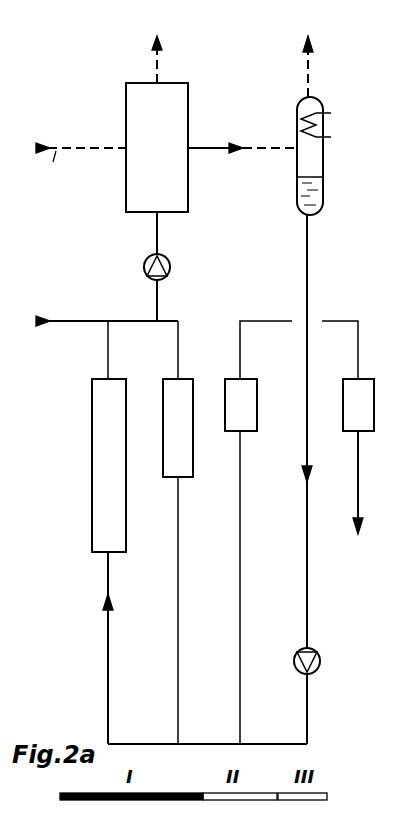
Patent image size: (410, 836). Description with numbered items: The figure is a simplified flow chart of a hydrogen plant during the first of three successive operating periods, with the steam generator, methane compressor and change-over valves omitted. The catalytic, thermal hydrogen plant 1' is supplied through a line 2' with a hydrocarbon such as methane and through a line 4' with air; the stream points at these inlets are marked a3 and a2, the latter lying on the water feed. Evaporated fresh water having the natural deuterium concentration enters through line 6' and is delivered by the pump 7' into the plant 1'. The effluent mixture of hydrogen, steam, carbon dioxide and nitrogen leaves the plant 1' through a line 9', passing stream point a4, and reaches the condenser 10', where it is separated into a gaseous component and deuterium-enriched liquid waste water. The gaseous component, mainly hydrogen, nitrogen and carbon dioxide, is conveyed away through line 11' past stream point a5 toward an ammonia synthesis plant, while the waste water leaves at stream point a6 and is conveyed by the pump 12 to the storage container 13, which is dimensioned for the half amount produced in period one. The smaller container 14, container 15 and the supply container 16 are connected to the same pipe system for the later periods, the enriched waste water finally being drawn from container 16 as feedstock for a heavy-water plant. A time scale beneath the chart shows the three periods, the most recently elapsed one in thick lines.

The hydrogen plant 1' is at (170, 147).
The hydrocarbon supply line 2' is at (81, 162).
The air supply line 4' is at (139, 59).
The fresh water line 6' is at (107, 336).
The pump 7' is at (171, 266).
The effluent line 9' is at (242, 164).
The condenser 10' is at (331, 156).
The gas outlet line 11' is at (328, 66).
The pump 12 is at (320, 661).
The storage container 13 is at (91, 452).
The storage container 14 is at (194, 469).
The storage container 15 is at (257, 425).
The supply container 16 is at (374, 420).
The stream point a2 is at (159, 241).
The stream point a3 is at (88, 152).
The stream point a4 is at (243, 146).
The stream point a5 is at (311, 92).
The stream point a6 is at (309, 243).